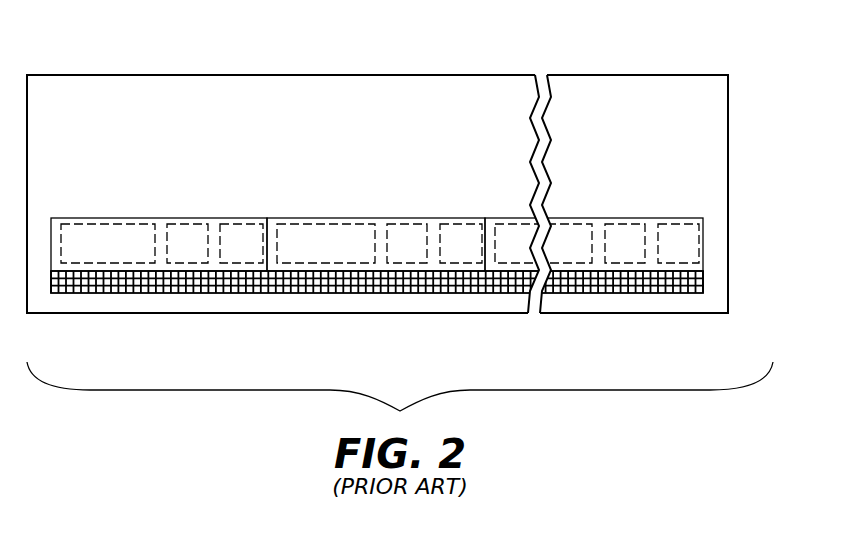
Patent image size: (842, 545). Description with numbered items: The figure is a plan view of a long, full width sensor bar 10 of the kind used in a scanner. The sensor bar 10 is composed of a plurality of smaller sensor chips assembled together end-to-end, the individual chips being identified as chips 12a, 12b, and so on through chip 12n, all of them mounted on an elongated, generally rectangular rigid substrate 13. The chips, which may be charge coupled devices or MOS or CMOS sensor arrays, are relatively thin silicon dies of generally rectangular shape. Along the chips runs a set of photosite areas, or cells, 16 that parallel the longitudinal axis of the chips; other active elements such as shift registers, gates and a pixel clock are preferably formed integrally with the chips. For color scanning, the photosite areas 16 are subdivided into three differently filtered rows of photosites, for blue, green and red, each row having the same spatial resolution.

The full width sensor bar 10 is at (377, 188).
The sensor chip 12a is at (105, 218).
The sensor chip 12b is at (382, 218).
The sensor chip 12n is at (598, 218).
The rigid substrate 13 is at (395, 313).
The photosite areas 16 is at (60, 293).